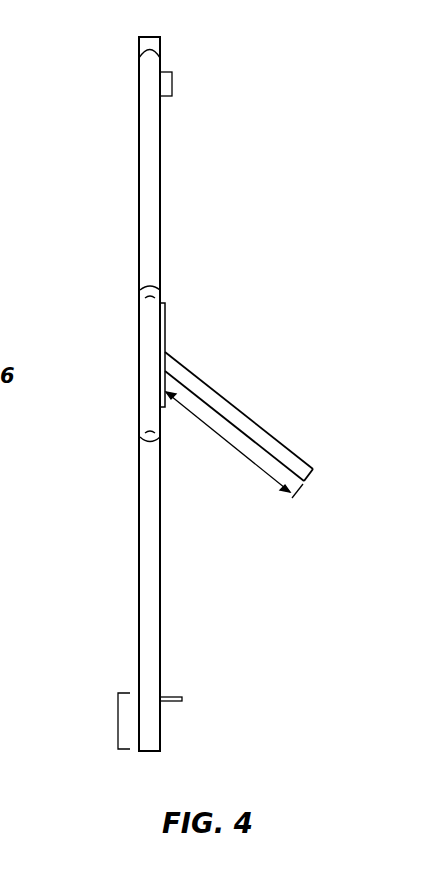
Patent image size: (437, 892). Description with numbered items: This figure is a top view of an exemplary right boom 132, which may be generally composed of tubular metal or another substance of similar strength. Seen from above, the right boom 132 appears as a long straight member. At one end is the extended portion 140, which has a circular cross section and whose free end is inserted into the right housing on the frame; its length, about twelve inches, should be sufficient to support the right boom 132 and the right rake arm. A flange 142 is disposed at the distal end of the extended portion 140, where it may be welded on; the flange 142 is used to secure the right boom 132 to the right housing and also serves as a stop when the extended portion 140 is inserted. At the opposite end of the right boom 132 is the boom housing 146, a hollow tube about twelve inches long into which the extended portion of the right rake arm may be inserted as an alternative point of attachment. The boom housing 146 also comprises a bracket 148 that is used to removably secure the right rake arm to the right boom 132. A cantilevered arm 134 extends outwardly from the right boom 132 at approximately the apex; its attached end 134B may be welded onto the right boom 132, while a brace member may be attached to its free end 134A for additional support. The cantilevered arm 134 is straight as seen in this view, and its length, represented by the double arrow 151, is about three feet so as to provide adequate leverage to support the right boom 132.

The right boom 132 is at (147, 173).
The boom housing 146 is at (139, 42).
The bracket 148 is at (172, 87).
The cantilevered arm 134 is at (243, 413).
The free end 134A is at (312, 473).
The attached end 134B is at (165, 352).
The length of the cantilevered arm 151 is at (222, 438).
The flange 142 is at (182, 698).
The extended portion 140 is at (118, 725).